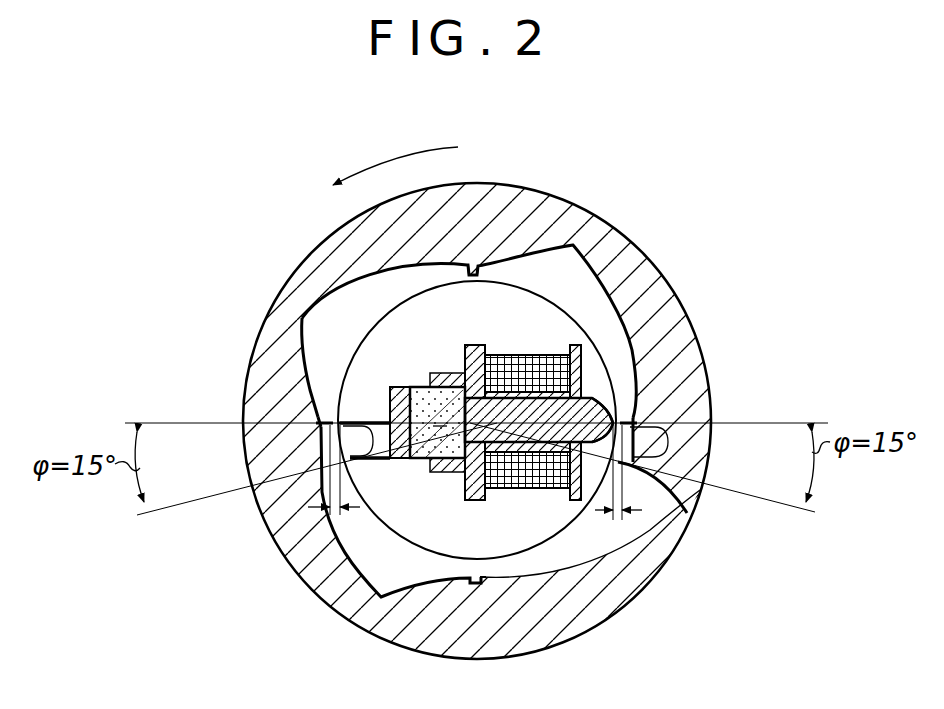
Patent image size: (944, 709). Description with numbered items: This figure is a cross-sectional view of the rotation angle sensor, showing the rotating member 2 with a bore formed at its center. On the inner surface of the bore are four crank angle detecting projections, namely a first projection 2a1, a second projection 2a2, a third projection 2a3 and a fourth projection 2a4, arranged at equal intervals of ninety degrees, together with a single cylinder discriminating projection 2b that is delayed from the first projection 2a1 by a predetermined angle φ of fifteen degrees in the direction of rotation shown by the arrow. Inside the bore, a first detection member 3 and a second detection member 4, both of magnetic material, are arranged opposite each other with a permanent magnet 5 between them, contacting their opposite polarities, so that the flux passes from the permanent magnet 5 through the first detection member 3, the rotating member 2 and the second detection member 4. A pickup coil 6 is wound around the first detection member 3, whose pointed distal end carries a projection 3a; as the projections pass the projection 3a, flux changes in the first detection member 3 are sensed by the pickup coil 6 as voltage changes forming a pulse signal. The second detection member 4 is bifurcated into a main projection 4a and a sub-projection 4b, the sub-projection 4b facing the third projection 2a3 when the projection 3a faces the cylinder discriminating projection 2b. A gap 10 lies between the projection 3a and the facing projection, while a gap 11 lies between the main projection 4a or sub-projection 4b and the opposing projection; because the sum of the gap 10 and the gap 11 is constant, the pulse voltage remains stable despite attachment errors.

The rotating member 2 is at (580, 224).
The first projection 2a1 is at (633, 404).
The second projection 2a2 is at (473, 578).
The third projection 2a3 is at (310, 407).
The fourth projection 2a4 is at (480, 270).
The cylinder discriminating projection 2b is at (691, 509).
The first detection member 3 is at (608, 405).
The projection of the first detection member 3a is at (598, 408).
The second detection member 4 is at (391, 388).
The main projection 4a is at (343, 420).
The sub-projection 4b is at (352, 461).
The permanent magnet 5 is at (411, 390).
The pickup coil 6 is at (511, 356).
The gap 10 is at (617, 512).
The gap 11 is at (340, 507).